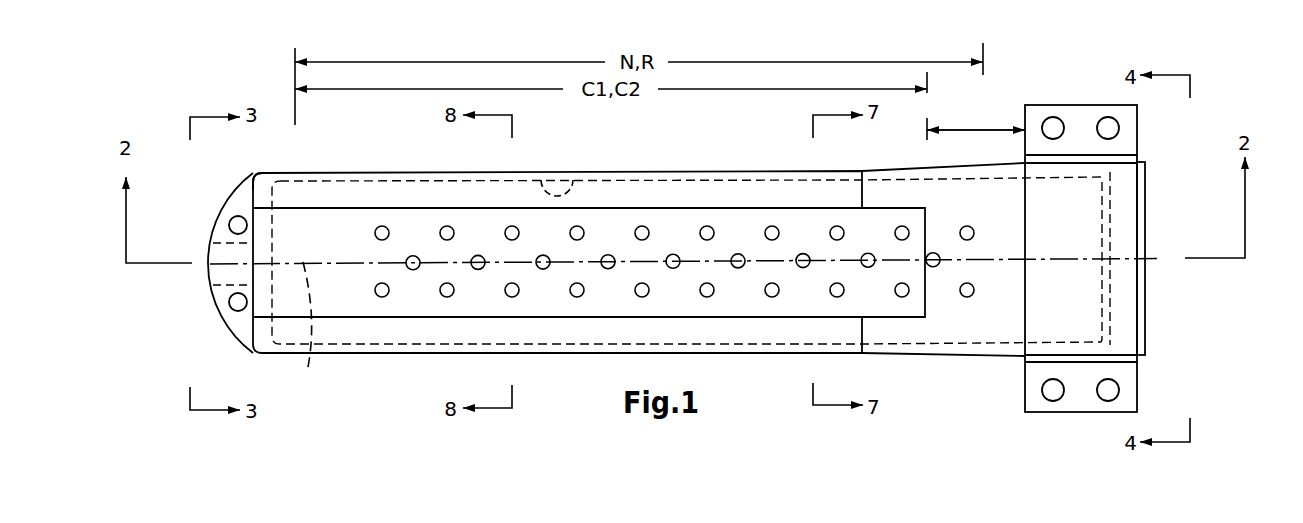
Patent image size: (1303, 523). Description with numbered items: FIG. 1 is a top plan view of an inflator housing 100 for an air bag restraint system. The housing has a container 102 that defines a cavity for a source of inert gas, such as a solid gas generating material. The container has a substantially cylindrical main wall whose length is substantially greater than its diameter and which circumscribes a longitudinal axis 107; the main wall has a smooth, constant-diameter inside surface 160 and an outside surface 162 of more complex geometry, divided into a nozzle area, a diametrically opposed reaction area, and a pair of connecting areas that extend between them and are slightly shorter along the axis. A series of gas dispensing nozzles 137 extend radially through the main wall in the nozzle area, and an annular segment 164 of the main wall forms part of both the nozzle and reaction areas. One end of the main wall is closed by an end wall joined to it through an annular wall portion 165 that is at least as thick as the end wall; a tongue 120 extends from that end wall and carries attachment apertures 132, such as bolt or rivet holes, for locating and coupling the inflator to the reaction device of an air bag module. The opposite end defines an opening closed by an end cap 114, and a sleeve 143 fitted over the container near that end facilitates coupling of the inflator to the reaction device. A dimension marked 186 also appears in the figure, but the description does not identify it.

The inflator housing 100 is at (632, 162).
The container 102 is at (350, 171).
The longitudinal axis 107 is at (310, 332).
The end cap 114 is at (1141, 303).
The tongue 120 is at (215, 292).
The attachment apertures 132 is at (240, 227).
The gas dispensing nozzles 137 is at (443, 297).
The sleeve 143 is at (1070, 95).
The inside surface 160 is at (575, 182).
The outside surface 162 is at (698, 170).
The annular segment 164 is at (990, 310).
The annular wall portion 165 is at (264, 180).
The spacing dimension 186 is at (976, 123).